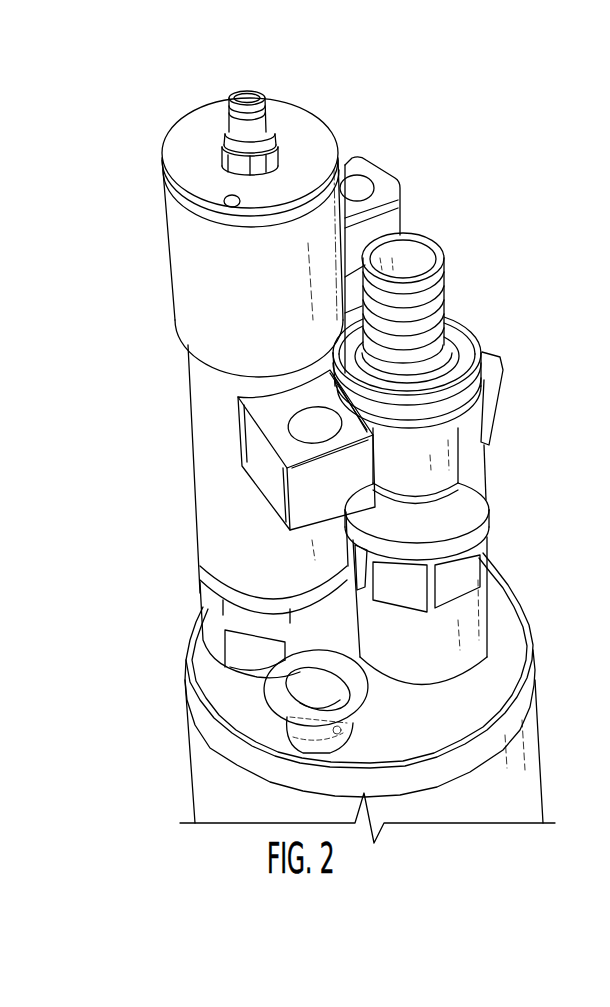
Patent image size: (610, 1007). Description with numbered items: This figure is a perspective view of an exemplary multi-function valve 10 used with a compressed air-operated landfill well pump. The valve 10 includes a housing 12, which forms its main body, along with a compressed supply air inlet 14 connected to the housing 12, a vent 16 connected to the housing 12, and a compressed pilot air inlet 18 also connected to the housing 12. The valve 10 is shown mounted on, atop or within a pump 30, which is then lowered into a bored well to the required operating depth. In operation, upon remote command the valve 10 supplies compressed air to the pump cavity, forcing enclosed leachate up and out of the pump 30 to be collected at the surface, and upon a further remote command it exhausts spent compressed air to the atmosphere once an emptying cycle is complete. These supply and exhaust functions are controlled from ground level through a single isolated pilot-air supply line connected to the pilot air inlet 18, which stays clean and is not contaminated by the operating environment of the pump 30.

The multi-function valve 10 is at (421, 66).
The housing 12 is at (178, 338).
The compressed supply air inlet 14 is at (380, 190).
The vent 16 is at (270, 478).
The compressed pilot air inlet 18 is at (267, 110).
The pump 30 is at (520, 697).